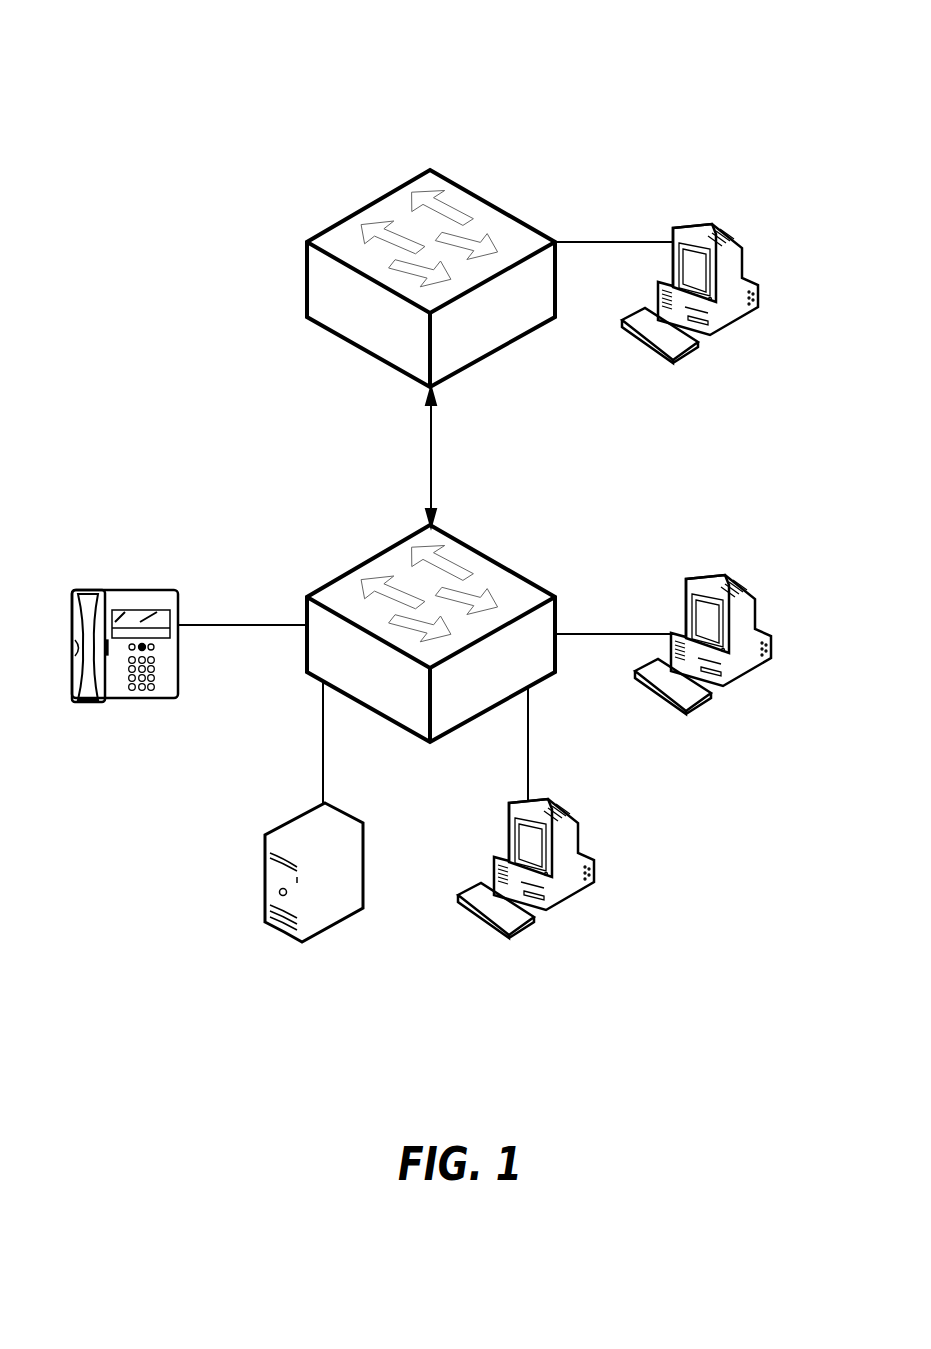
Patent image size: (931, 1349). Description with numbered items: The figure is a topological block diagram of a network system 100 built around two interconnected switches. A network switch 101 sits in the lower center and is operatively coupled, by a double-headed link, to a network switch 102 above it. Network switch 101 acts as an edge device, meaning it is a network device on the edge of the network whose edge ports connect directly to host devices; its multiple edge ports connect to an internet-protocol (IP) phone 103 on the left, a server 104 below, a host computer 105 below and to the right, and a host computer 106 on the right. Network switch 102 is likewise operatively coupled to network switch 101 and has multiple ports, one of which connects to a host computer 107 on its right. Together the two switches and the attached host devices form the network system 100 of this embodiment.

The network system 100 is at (763, 68).
The network switch 101 is at (385, 681).
The network switch 102 is at (498, 326).
The internet-protocol (IP) phone 103 is at (179, 594).
The server 104 is at (363, 846).
The host computer 105 is at (582, 839).
The host computer 106 is at (755, 615).
The host computer 107 is at (743, 263).